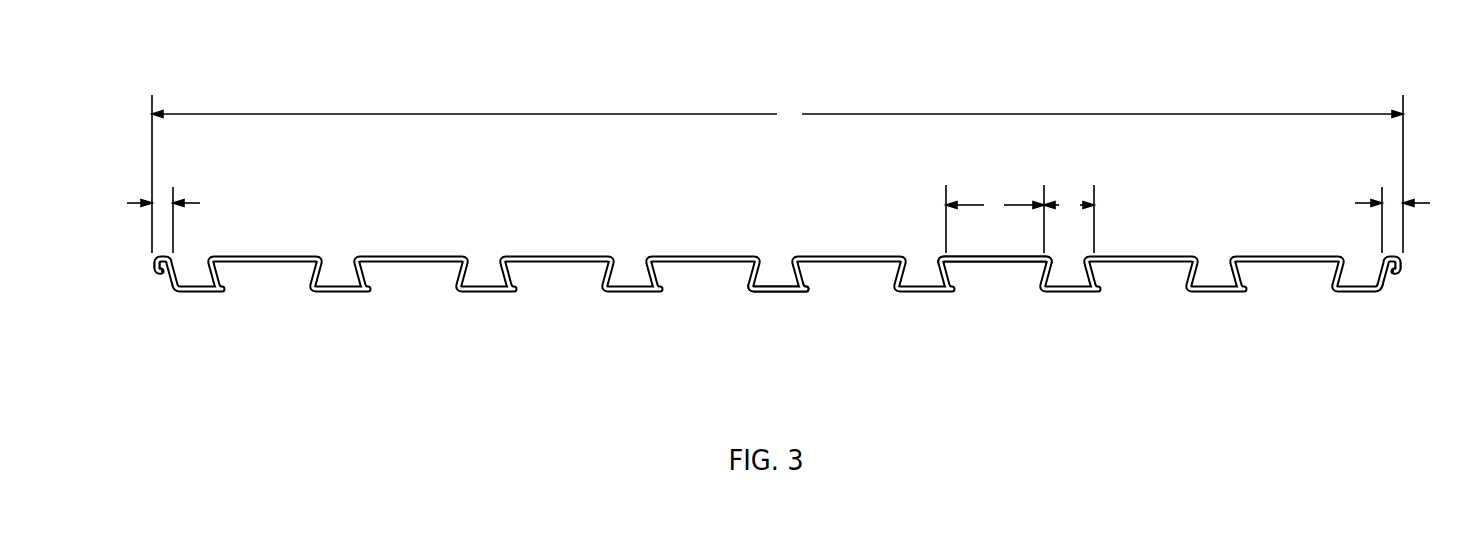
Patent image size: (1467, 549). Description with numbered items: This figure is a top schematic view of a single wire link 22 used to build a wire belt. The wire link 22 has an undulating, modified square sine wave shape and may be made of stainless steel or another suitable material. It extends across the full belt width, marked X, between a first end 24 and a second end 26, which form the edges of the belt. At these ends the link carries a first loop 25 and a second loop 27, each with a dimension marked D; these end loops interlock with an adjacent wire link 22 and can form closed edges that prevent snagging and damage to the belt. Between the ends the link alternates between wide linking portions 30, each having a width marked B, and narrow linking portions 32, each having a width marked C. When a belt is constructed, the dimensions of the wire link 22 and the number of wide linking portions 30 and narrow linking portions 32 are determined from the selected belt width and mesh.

The wire link 22 is at (773, 46).
The first end 24 is at (152, 270).
The first loop 25 is at (162, 256).
The second end 26 is at (1408, 277).
The second loop 27 is at (1400, 253).
The wide linking portion 30 is at (967, 262).
The narrow linking portion 32 is at (775, 294).